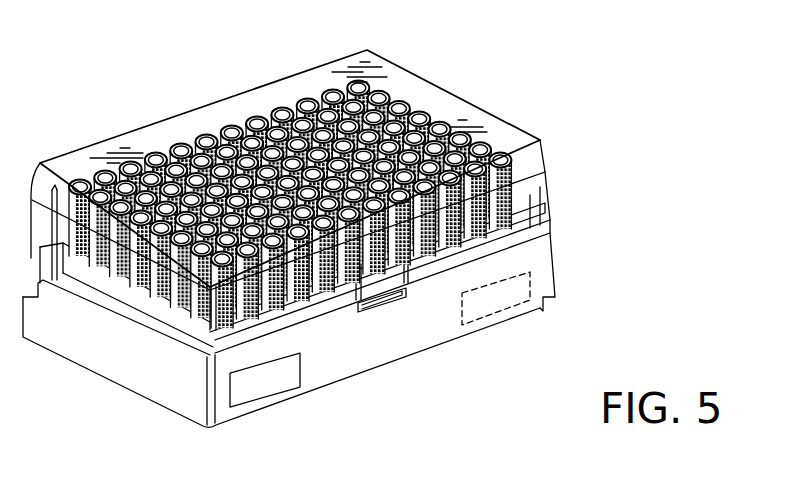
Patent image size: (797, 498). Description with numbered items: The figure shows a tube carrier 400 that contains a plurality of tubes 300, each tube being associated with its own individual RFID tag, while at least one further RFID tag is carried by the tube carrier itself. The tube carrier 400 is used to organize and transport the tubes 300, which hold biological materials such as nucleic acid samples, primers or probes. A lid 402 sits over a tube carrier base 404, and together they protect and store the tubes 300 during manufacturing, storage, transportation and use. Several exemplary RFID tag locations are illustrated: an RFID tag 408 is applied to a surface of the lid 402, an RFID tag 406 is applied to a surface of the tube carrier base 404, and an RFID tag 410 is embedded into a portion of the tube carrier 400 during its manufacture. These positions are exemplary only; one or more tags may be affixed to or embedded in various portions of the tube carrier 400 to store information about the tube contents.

The tube carrier 400 is at (169, 50).
The lid 402 is at (152, 137).
The tube carrier base 404 is at (289, 320).
The RFID tag 406 is at (262, 386).
The RFID tag 408 is at (300, 132).
The RFID tag 410 is at (497, 297).
The tubes 300 is at (530, 208).